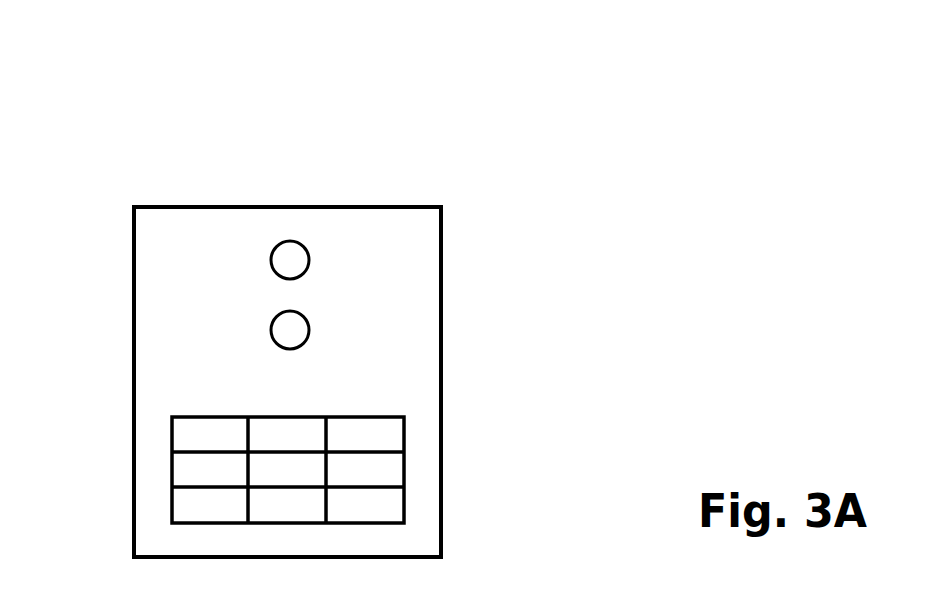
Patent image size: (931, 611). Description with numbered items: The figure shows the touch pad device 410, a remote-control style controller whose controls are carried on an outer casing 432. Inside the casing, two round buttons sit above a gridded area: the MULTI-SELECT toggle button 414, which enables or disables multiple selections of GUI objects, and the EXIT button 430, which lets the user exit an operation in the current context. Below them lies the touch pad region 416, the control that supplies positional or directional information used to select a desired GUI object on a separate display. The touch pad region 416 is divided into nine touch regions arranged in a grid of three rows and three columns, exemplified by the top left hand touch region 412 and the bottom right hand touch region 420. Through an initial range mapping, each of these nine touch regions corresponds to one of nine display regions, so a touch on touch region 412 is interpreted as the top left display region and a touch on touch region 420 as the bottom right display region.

The touch pad device 410 is at (678, 142).
The touch region 412 is at (211, 435).
The MULTI-SELECT toggle button 414 is at (309, 328).
The touch pad region 416 is at (415, 392).
The touch region 420 is at (373, 505).
The EXIT button 430 is at (275, 243).
The outer casing 432 is at (423, 206).